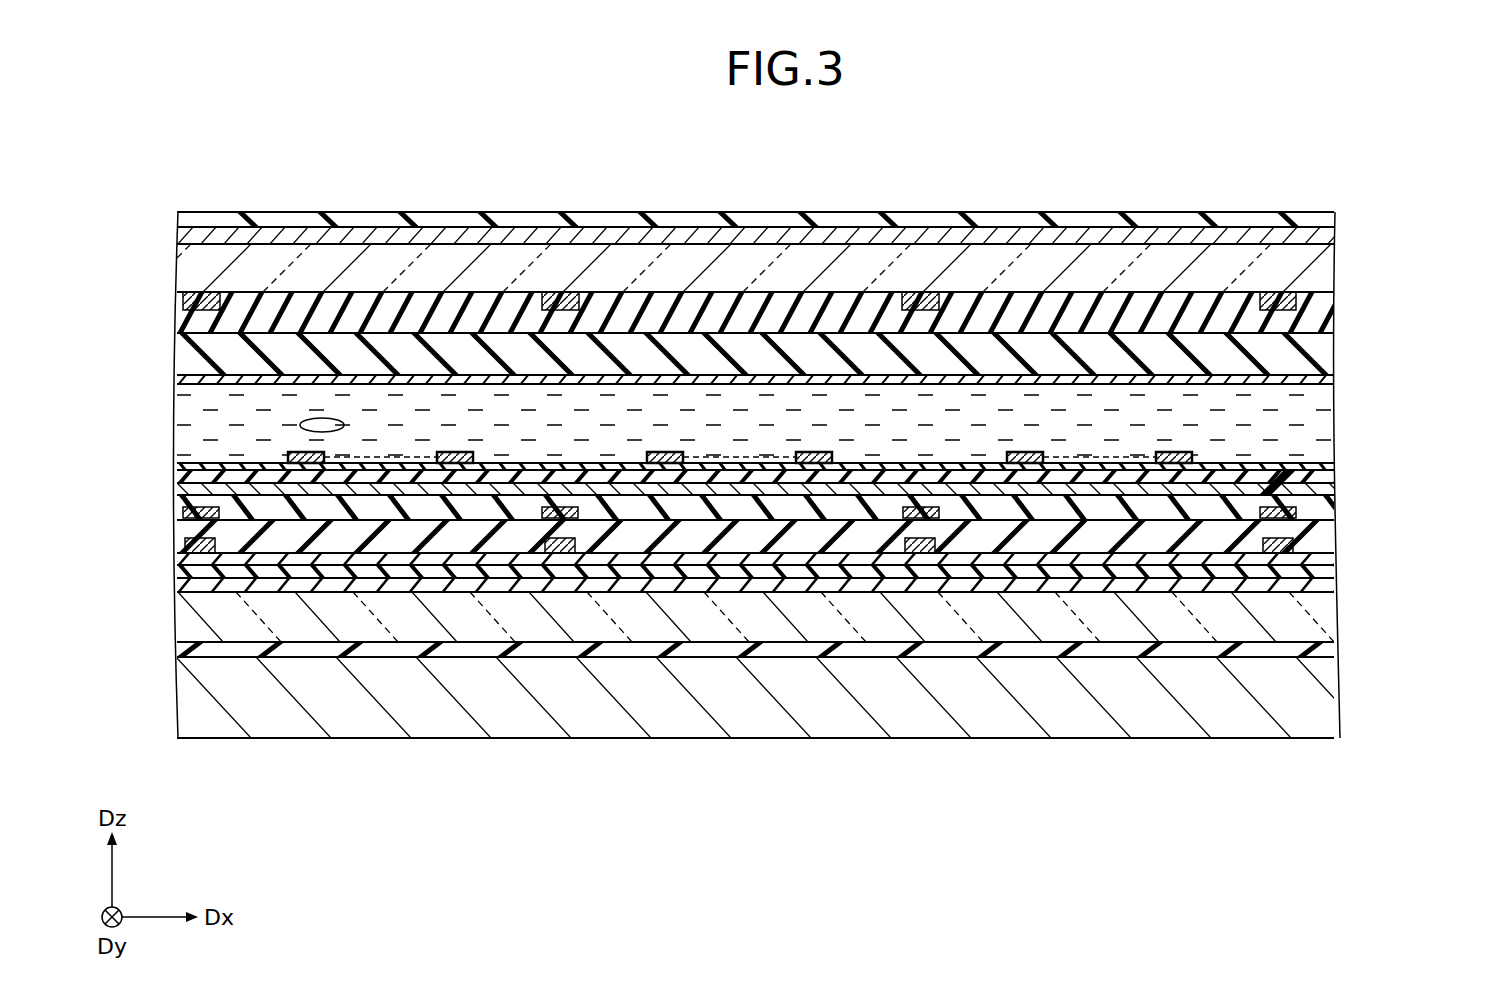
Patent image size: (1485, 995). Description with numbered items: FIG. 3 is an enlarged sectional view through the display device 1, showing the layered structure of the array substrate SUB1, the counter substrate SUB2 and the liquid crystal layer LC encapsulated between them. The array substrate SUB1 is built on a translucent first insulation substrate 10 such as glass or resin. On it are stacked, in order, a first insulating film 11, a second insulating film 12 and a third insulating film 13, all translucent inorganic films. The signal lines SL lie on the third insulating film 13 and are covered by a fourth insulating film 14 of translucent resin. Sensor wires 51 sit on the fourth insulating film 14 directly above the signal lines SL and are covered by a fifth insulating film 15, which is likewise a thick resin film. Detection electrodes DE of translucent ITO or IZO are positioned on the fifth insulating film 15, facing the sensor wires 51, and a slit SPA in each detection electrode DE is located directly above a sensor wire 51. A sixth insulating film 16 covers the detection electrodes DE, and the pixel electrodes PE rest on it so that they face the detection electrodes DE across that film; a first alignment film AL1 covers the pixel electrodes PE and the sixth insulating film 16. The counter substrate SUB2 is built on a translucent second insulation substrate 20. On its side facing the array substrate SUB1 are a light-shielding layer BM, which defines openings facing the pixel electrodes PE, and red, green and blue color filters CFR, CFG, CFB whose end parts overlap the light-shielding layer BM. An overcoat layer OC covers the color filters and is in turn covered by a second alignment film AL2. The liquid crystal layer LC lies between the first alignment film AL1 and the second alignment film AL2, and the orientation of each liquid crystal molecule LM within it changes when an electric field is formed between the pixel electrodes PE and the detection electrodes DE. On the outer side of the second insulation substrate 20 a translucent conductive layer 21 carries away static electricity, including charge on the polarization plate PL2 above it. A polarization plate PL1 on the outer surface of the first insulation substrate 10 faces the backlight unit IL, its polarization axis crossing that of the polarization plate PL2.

The display device 1 is at (1330, 203).
The light-shielding layer BM is at (1278, 292).
The red color filter CFR is at (383, 304).
The green color filter CFG is at (740, 304).
The blue color filter CFB is at (1100, 304).
The polarization plate PL2 is at (1322, 221).
The conductive layer 21 is at (1330, 238).
The second insulation substrate 20 is at (1320, 270).
The counter substrate SUB2 is at (1350, 309).
The overcoat layer OC is at (1320, 355).
The second alignment film AL2 is at (1322, 380).
The liquid crystal layer LC is at (1322, 425).
The liquid crystal molecule LM is at (300, 424).
The pixel electrode PE is at (1106, 424).
The sensor wire 51 is at (1262, 505).
The slit SPA is at (1282, 476).
The first alignment film AL1 is at (1322, 466).
The sixth insulating film 16 is at (1330, 478).
The fifth insulating film 15 is at (1300, 511).
The detection electrode DE is at (198, 497).
The array substrate SUB1 is at (1350, 517).
The fourth insulating film 14 is at (1300, 546).
The third insulating film 13 is at (1330, 560).
The second insulating film 12 is at (1330, 572).
The first insulating film 11 is at (1330, 590).
The first insulation substrate 10 is at (1322, 620).
The polarization plate PL1 is at (1322, 650).
The signal line SL is at (1276, 555).
The backlight unit IL is at (756, 730).